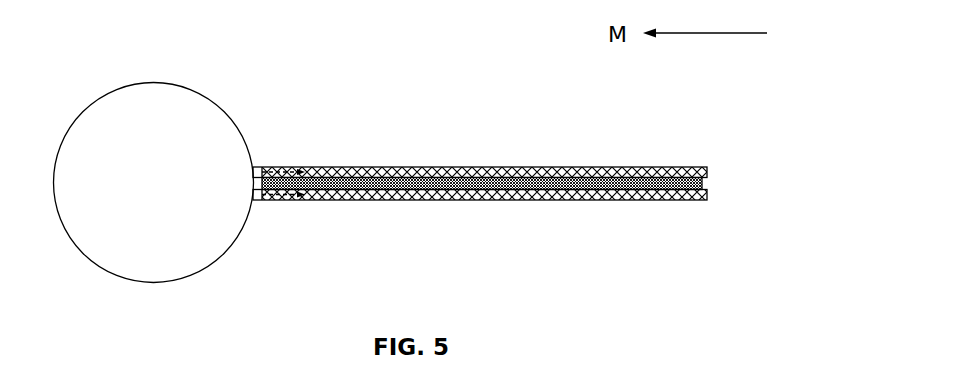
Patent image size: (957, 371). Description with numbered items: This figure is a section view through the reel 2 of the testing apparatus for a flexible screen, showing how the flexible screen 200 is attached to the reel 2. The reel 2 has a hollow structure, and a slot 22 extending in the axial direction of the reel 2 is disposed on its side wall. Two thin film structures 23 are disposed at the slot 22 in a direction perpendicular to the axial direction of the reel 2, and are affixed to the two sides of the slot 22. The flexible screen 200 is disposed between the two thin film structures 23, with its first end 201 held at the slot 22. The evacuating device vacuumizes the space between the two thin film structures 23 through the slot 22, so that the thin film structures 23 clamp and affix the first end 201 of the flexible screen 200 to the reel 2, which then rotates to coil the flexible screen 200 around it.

The reel 2 is at (213, 102).
The slot 22 is at (253, 184).
The thin film structures 23 is at (322, 167).
The flexible screen 200 is at (552, 184).
The first end 201 is at (283, 200).